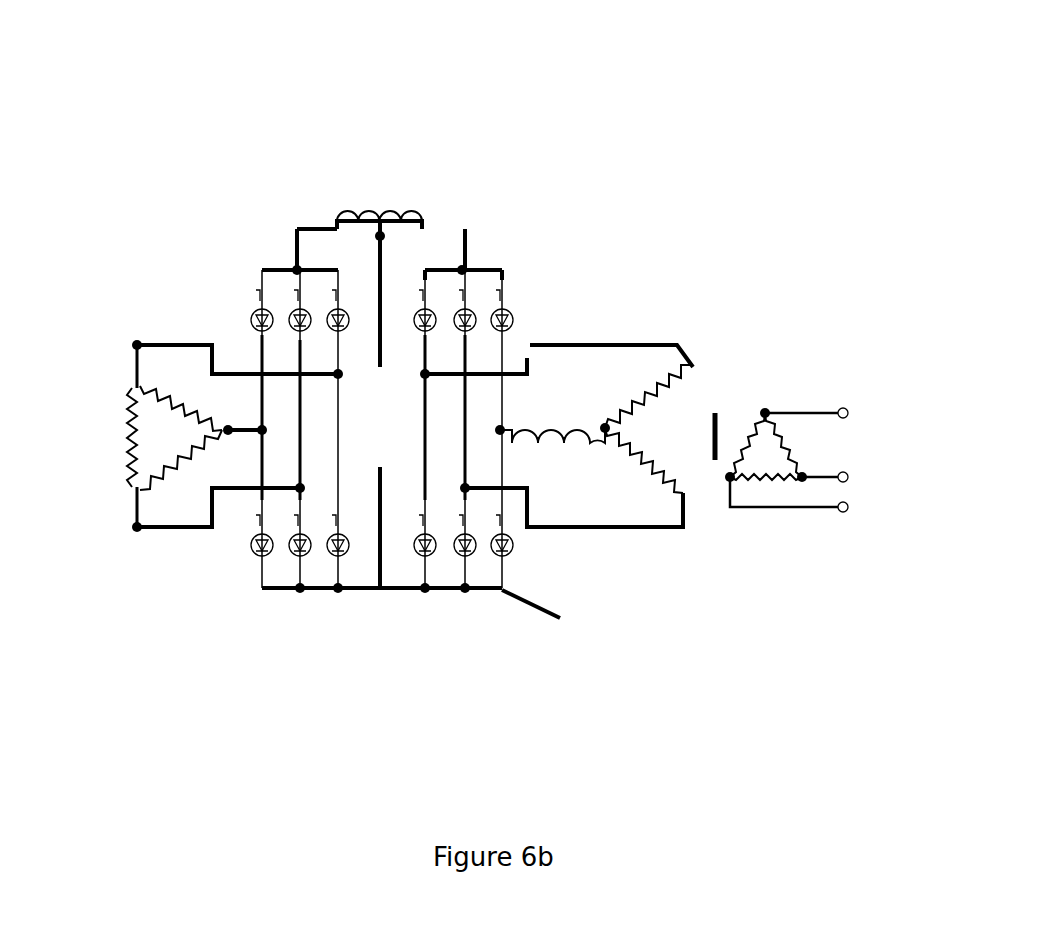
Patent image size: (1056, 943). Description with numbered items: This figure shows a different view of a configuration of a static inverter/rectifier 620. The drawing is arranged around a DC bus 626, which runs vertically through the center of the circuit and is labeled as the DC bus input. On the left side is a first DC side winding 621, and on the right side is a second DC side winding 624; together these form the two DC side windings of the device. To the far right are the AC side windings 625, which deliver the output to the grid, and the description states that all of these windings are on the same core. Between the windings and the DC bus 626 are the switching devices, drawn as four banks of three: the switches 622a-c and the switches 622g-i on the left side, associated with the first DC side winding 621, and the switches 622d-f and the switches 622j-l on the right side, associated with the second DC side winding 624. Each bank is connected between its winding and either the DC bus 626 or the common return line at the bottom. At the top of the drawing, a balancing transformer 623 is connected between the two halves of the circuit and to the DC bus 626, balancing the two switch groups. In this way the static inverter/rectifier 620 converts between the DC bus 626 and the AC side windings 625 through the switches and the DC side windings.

The static inverter/rectifier 620 is at (960, 93).
The DC side winding 621 is at (126, 395).
The switches 622a-c is at (262, 320).
The switches 622d-f is at (500, 319).
The switches 622g-i is at (258, 547).
The switches 622j-l is at (512, 543).
The balancing transformer 623 is at (402, 222).
The DC side winding 624 is at (603, 428).
The AC side windings 625 is at (815, 410).
The DC bus 626 is at (370, 378).